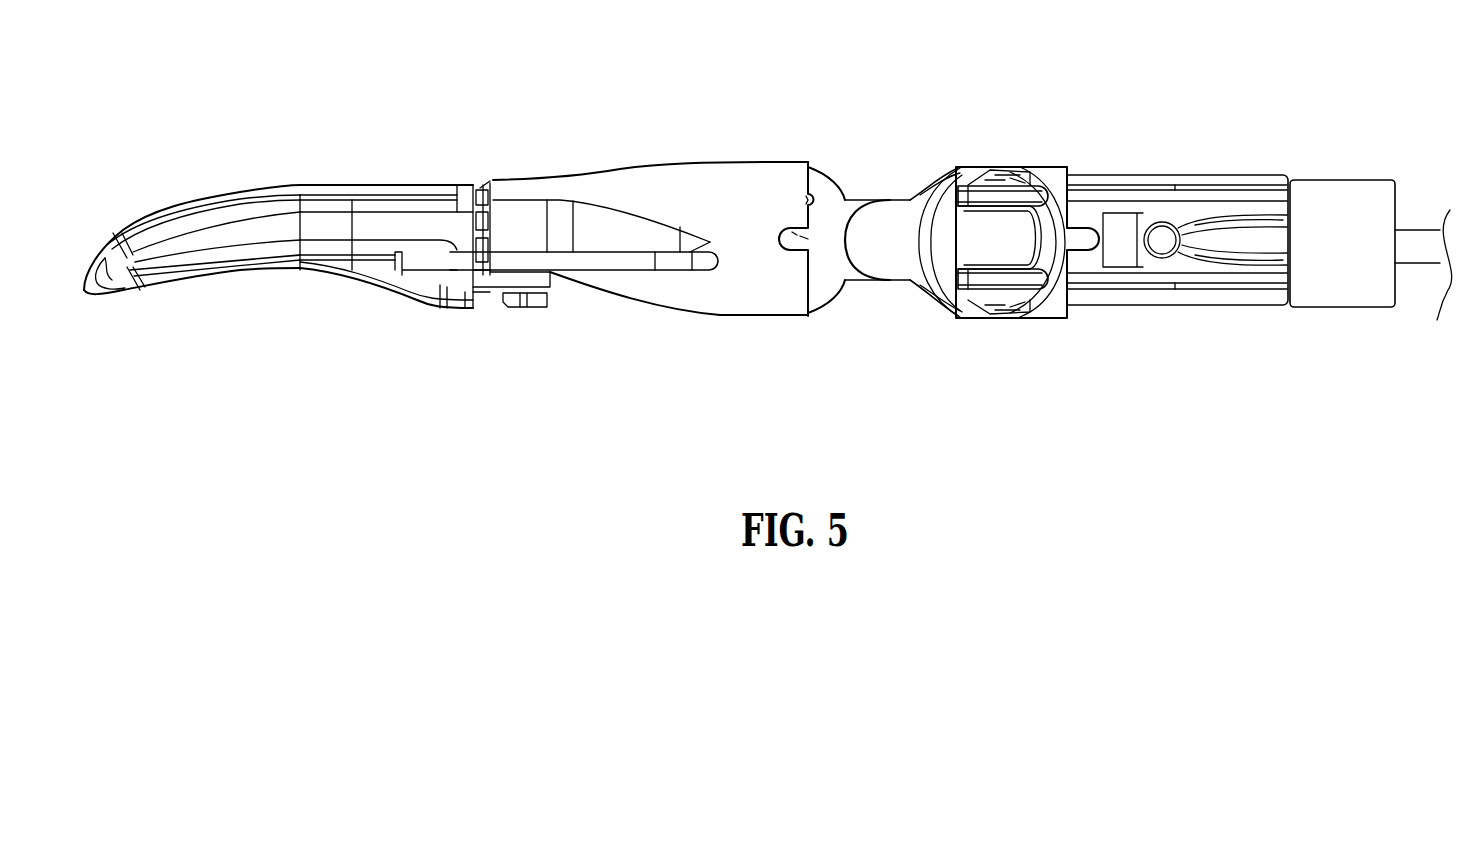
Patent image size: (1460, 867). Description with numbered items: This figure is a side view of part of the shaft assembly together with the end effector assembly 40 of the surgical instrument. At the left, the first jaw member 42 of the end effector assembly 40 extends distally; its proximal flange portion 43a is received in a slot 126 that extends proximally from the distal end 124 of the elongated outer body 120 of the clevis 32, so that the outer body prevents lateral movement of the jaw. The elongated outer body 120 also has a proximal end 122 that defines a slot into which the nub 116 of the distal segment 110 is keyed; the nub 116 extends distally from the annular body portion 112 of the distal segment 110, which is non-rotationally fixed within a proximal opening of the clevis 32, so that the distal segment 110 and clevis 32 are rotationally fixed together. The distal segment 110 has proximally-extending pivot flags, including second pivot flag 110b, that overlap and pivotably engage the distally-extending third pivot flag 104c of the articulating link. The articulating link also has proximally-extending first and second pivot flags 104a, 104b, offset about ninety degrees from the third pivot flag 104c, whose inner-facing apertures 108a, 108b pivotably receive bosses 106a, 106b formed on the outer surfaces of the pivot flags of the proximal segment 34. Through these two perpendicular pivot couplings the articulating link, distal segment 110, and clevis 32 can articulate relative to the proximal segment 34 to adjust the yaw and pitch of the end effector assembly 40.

The clevis 32 is at (670, 96).
The proximal segment 34 is at (1204, 138).
The end effector assembly 40 is at (361, 104).
The first jaw member 42 is at (215, 242).
The proximal flange portion 43a is at (550, 273).
The first pivot flag 104a is at (1007, 184).
The second pivot flag 104b is at (962, 318).
The third pivot flag 104c is at (888, 226).
The boss 106a is at (1035, 185).
The boss 106b is at (1005, 300).
The aperture 108a is at (963, 190).
The aperture 108b is at (987, 300).
The distal segment 110 is at (825, 350).
The second pivot flag 110b is at (862, 203).
The annular body portion 112 is at (828, 196).
The nub 116 is at (797, 240).
The elongated outer body 120 is at (607, 316).
The proximal end 122 is at (810, 196).
The distal end 124 is at (492, 180).
The slot 126 is at (587, 240).